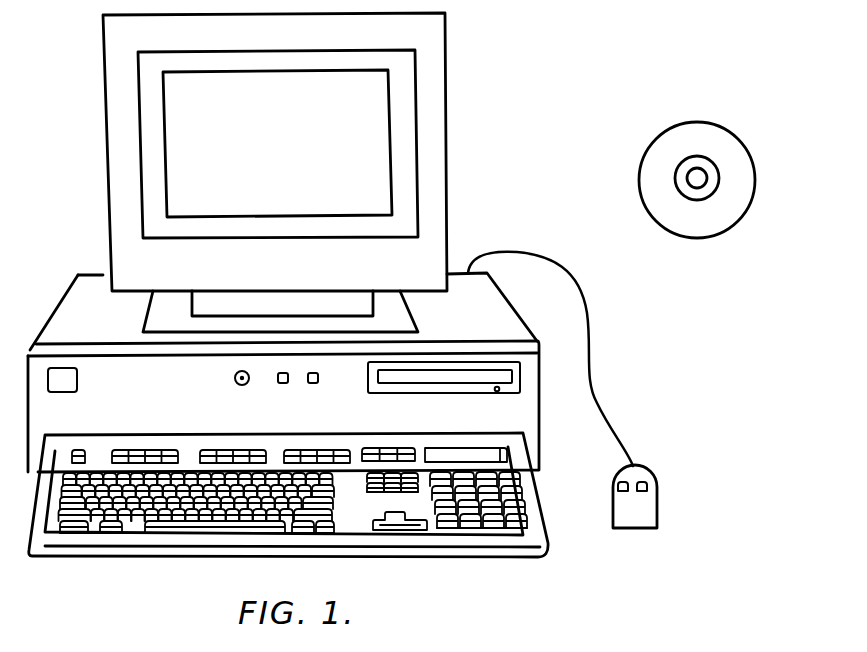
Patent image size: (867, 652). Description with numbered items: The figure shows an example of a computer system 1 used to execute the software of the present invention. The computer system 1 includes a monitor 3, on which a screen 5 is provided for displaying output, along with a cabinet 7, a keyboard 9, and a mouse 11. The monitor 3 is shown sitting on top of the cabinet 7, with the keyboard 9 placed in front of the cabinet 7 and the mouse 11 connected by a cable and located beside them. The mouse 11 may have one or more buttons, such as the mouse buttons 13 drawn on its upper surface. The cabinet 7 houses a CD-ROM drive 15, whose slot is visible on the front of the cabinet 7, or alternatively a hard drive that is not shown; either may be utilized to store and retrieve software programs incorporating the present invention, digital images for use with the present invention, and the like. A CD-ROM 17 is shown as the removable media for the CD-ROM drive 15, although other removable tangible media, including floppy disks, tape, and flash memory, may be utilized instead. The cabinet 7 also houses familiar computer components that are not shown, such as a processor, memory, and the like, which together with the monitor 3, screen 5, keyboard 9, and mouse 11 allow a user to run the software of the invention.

The computer system 1 is at (593, 42).
The monitor 3 is at (448, 123).
The screen 5 is at (358, 112).
The cabinet 7 is at (490, 320).
The keyboard 9 is at (243, 558).
The mouse 11 is at (643, 512).
The mouse buttons 13 is at (623, 479).
The CD-ROM drive 15 is at (520, 377).
The CD-ROM 17 is at (722, 128).